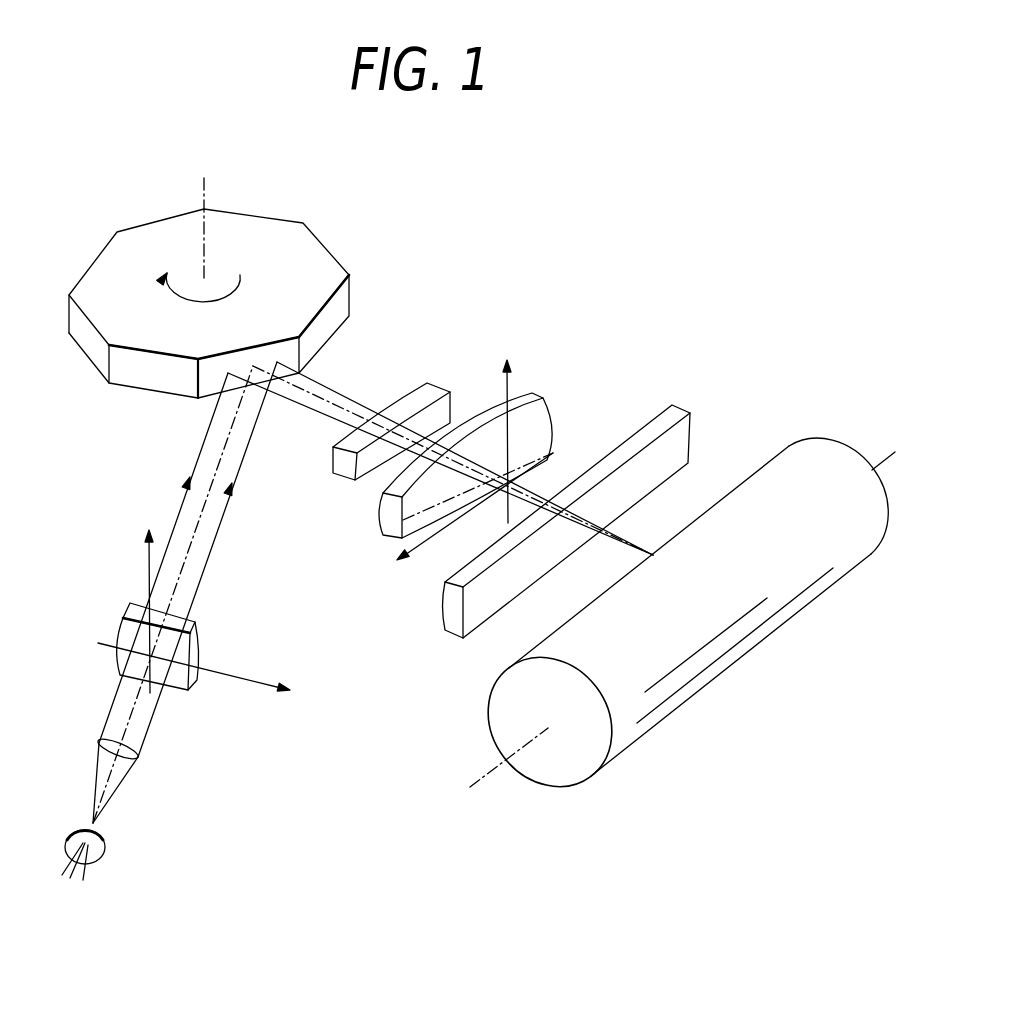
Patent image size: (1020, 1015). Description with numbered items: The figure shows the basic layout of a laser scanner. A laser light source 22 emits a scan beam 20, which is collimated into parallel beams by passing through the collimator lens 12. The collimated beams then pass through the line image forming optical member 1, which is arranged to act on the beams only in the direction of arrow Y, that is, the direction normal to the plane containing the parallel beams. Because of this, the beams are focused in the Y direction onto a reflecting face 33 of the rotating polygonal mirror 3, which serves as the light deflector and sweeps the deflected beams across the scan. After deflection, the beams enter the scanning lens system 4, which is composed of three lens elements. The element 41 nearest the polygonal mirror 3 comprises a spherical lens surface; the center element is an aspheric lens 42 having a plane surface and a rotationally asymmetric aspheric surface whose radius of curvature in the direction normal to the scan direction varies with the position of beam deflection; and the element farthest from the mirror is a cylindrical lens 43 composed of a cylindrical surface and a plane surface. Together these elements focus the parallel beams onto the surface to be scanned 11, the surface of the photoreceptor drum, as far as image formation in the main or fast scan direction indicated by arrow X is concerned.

The line image forming optical member 1 is at (198, 643).
The rotating polygonal mirror 3 is at (240, 288).
The reflecting face 33 is at (342, 300).
The scanning lens system 4 is at (448, 312).
The first lens element 41 is at (443, 388).
The aspheric lens 42 is at (542, 397).
The cylindrical lens 43 is at (675, 413).
The surface to be scanned 11 is at (765, 475).
The collimator lens 12 is at (138, 757).
The scan beam 20 is at (117, 790).
The laser light source 22 is at (105, 848).